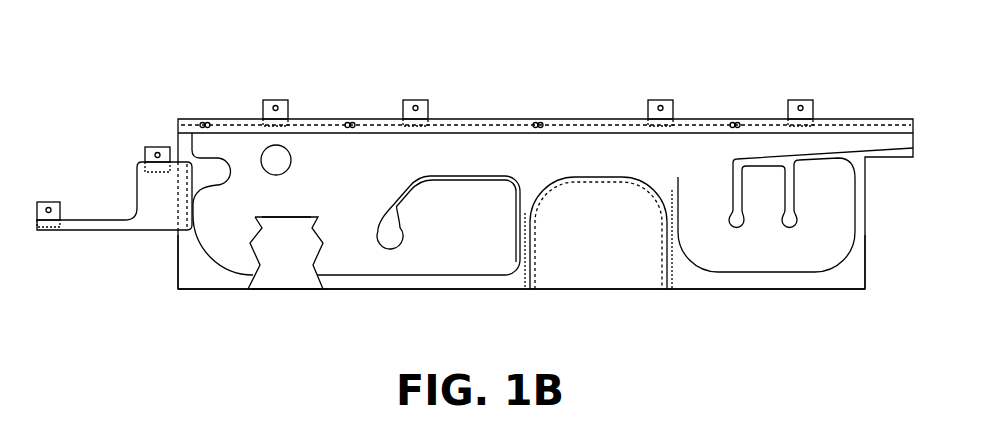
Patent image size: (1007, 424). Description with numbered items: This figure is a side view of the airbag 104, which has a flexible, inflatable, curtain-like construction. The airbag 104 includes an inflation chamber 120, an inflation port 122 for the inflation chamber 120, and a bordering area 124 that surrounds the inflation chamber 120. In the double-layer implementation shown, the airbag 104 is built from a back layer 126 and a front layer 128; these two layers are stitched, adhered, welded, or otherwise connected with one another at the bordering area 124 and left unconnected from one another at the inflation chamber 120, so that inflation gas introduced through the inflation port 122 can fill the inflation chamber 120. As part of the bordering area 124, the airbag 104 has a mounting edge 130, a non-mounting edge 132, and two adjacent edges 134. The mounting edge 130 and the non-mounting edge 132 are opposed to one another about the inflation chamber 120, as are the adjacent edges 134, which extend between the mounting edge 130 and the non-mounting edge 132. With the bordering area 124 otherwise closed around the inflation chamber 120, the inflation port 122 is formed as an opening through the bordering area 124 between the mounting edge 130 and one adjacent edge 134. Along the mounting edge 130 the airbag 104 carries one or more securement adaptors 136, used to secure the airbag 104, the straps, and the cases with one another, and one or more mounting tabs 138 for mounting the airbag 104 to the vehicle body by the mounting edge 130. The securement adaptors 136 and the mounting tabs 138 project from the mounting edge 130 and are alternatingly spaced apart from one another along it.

The airbag 104 is at (487, 118).
The bordering area 124 is at (472, 118).
The mounting edge 130 is at (456, 118).
The securement adaptor 136 is at (543, 118).
The mounting tab 138 is at (668, 100).
The inflation port 122 is at (860, 137).
The adjacent edge 134 is at (865, 267).
The non-mounting edge 132 is at (441, 289).
The front layer 128 is at (303, 212).
The inflation chamber 120 is at (285, 253).
The back layer 126 is at (302, 266).